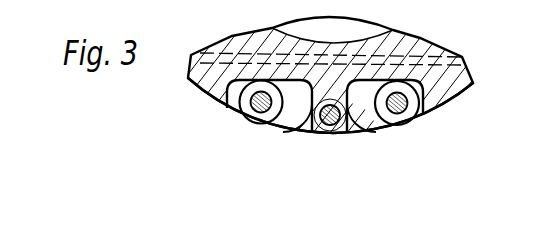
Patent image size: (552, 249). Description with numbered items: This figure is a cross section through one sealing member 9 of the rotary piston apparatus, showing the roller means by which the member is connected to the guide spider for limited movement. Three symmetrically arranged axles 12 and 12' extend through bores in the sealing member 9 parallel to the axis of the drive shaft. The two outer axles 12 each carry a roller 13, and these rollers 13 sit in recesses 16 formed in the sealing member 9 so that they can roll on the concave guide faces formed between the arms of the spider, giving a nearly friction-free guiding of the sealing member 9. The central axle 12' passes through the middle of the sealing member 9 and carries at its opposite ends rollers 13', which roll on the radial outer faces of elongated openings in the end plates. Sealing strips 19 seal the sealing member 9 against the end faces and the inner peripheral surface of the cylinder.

The sealing member 9 is at (427, 45).
The sealing strips 19 is at (455, 60).
The rollers 13 is at (342, 120).
The axles 12 is at (353, 133).
The central axle 12' is at (379, 134).
The rollers 13' is at (319, 138).
The recesses 16 is at (348, 136).